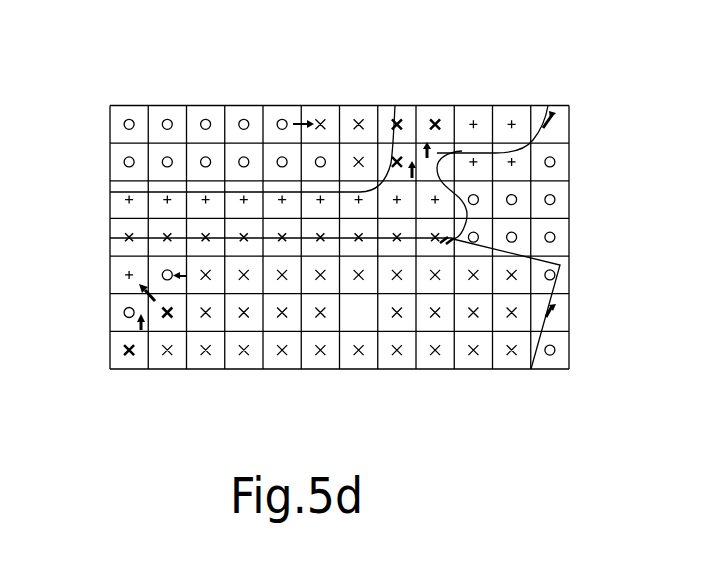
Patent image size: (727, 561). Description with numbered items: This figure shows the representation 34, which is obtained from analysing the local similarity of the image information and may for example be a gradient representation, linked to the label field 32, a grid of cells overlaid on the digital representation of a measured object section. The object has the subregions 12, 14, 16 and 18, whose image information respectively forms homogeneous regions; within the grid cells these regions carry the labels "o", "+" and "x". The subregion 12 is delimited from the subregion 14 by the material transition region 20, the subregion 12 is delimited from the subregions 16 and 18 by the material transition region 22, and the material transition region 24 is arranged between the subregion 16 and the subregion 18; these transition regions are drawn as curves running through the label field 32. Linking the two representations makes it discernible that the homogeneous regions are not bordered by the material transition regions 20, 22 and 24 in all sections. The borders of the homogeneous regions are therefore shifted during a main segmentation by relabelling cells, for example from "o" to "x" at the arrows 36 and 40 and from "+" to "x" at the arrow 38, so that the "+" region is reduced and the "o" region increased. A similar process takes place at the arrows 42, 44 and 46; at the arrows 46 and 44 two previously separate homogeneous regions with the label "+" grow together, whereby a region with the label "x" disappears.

The subregion 12 is at (427, 118).
The subregion 14 is at (110, 130).
The subregion 16 is at (558, 193).
The subregion 18 is at (370, 357).
The material transition region 20 is at (110, 184).
The material transition region 22 is at (150, 242).
The material transition region 24 is at (547, 322).
The label field 32 is at (341, 110).
The representation 34 is at (572, 235).
The arrow 36 is at (138, 337).
The arrow 38 is at (153, 300).
The arrow 40 is at (186, 277).
The arrow 42 is at (293, 120).
The arrow 44 is at (427, 143).
The arrow 46 is at (422, 173).